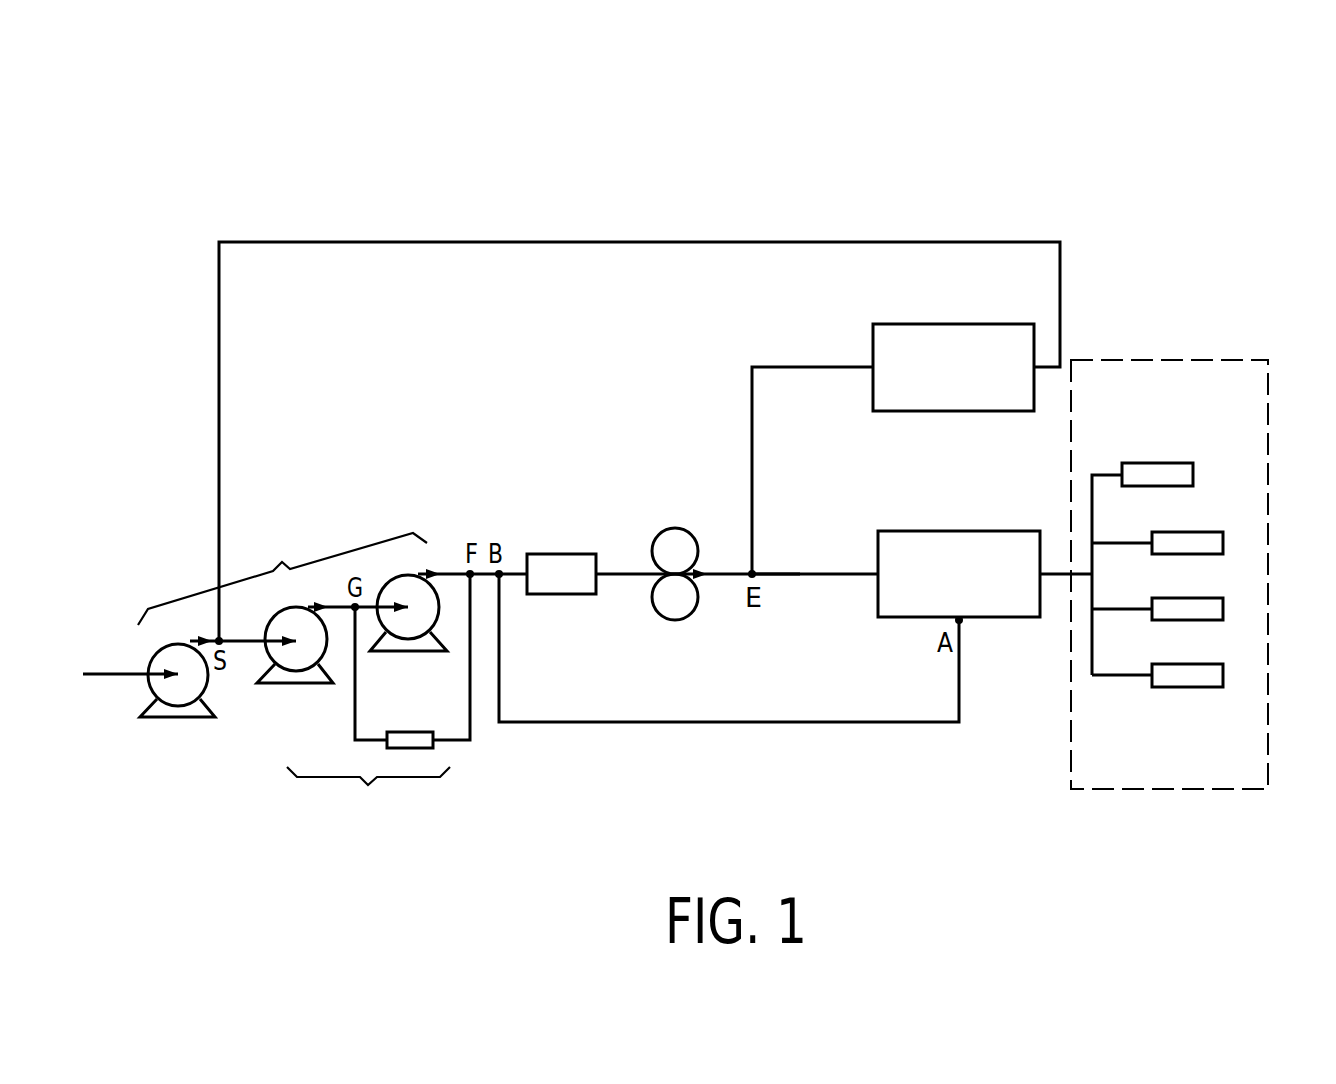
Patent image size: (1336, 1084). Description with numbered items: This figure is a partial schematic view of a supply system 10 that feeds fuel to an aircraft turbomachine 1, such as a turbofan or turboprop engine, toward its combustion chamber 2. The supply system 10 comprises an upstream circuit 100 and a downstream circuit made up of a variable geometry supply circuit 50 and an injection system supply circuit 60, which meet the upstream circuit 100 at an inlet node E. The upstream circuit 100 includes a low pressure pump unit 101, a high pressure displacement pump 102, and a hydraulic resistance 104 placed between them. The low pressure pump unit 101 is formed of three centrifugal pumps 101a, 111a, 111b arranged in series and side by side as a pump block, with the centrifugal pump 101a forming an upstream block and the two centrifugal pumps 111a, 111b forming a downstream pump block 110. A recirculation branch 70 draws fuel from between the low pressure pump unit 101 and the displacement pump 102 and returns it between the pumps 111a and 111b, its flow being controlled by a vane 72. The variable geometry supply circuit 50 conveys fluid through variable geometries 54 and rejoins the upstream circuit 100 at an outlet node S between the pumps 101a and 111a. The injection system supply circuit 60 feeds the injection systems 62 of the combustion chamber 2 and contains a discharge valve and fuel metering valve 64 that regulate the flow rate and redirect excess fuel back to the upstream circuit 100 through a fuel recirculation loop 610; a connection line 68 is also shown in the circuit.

The turbomachine 1 is at (1182, 141).
The combustion chamber 2 is at (1270, 745).
The supply system 10 is at (717, 202).
The variable geometry supply circuit 50 is at (492, 240).
The variable geometries 54 is at (953, 341).
The injection system supply circuit 60 is at (840, 580).
The injection systems 62 is at (1163, 472).
The discharge valve and fuel metering valve 64 is at (993, 605).
The connection line 68 is at (1067, 572).
The recirculation branch 70 is at (472, 730).
The vane 72 is at (435, 750).
The upstream circuit 100 is at (465, 533).
The low pressure pump unit 101 is at (282, 577).
The centrifugal pump 101a is at (180, 693).
The high pressure displacement pump 102 is at (675, 602).
The hydraulic resistance 104 is at (560, 583).
The downstream pump block 110 is at (368, 793).
The centrifugal pump 111a is at (295, 660).
The centrifugal pump 111b is at (408, 627).
The fuel recirculation loop 610 is at (962, 680).